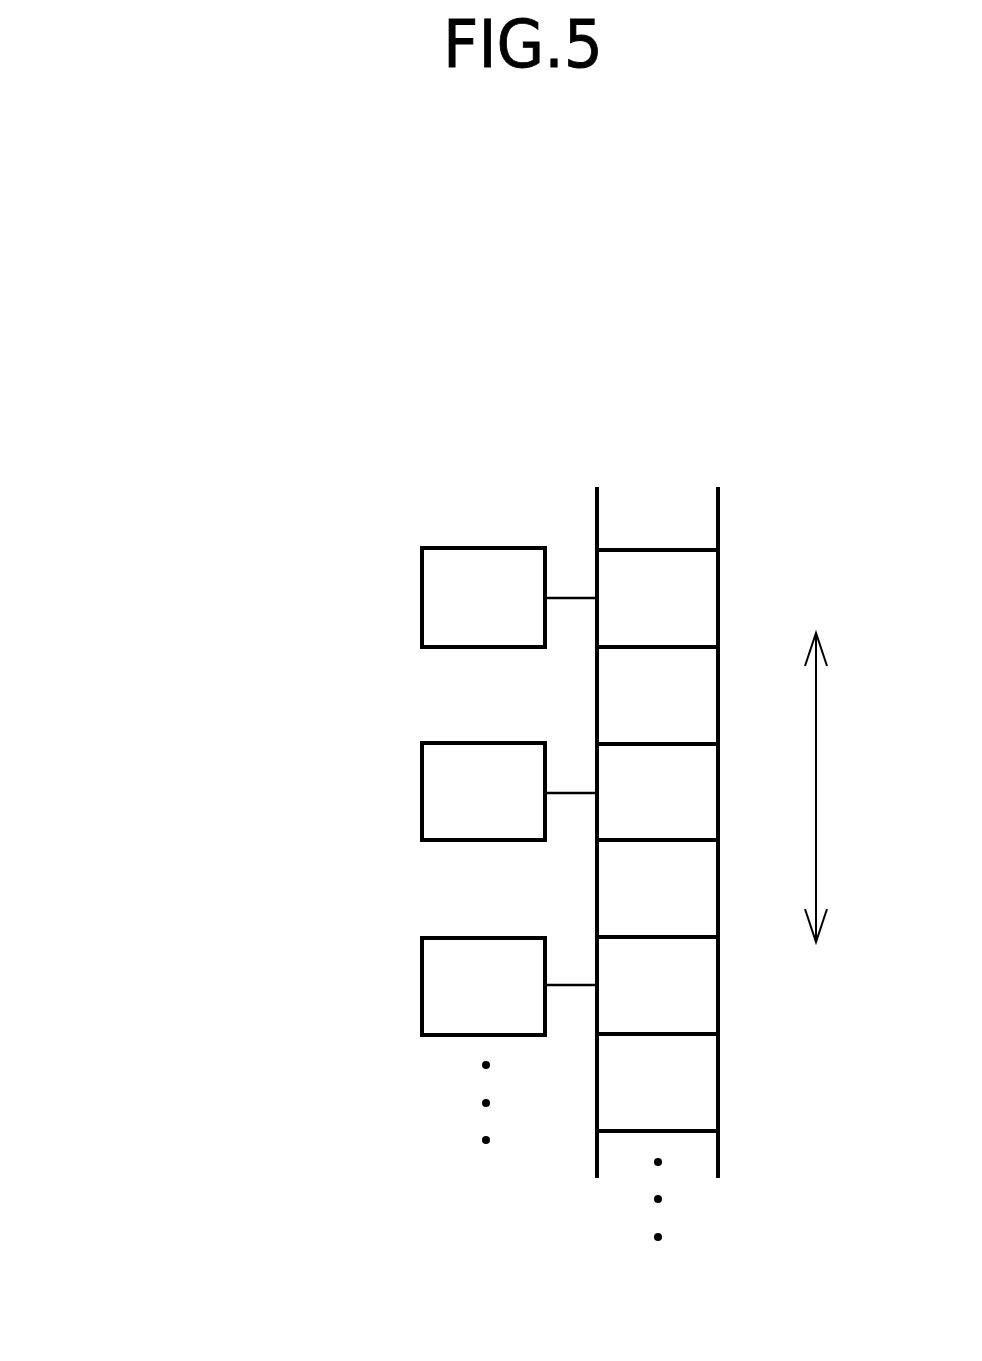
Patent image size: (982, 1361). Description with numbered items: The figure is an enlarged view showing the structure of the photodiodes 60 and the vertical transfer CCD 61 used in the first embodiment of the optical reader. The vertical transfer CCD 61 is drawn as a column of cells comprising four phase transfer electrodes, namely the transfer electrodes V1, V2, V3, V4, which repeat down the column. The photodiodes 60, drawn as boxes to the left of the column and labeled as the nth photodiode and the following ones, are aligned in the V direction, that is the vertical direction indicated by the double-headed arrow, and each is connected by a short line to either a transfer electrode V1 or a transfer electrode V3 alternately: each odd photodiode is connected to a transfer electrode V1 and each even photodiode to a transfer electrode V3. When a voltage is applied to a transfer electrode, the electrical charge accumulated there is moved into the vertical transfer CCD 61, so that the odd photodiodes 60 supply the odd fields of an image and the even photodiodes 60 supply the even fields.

The photodiodes 60 is at (352, 846).
The vertical transfer CCD 61 is at (680, 805).
The V direction V is at (842, 787).
The transfer electrode V1 is at (659, 795).
The transfer electrode V2 is at (659, 892).
The transfer electrode V3 is at (659, 796).
The transfer electrode V4 is at (659, 892).